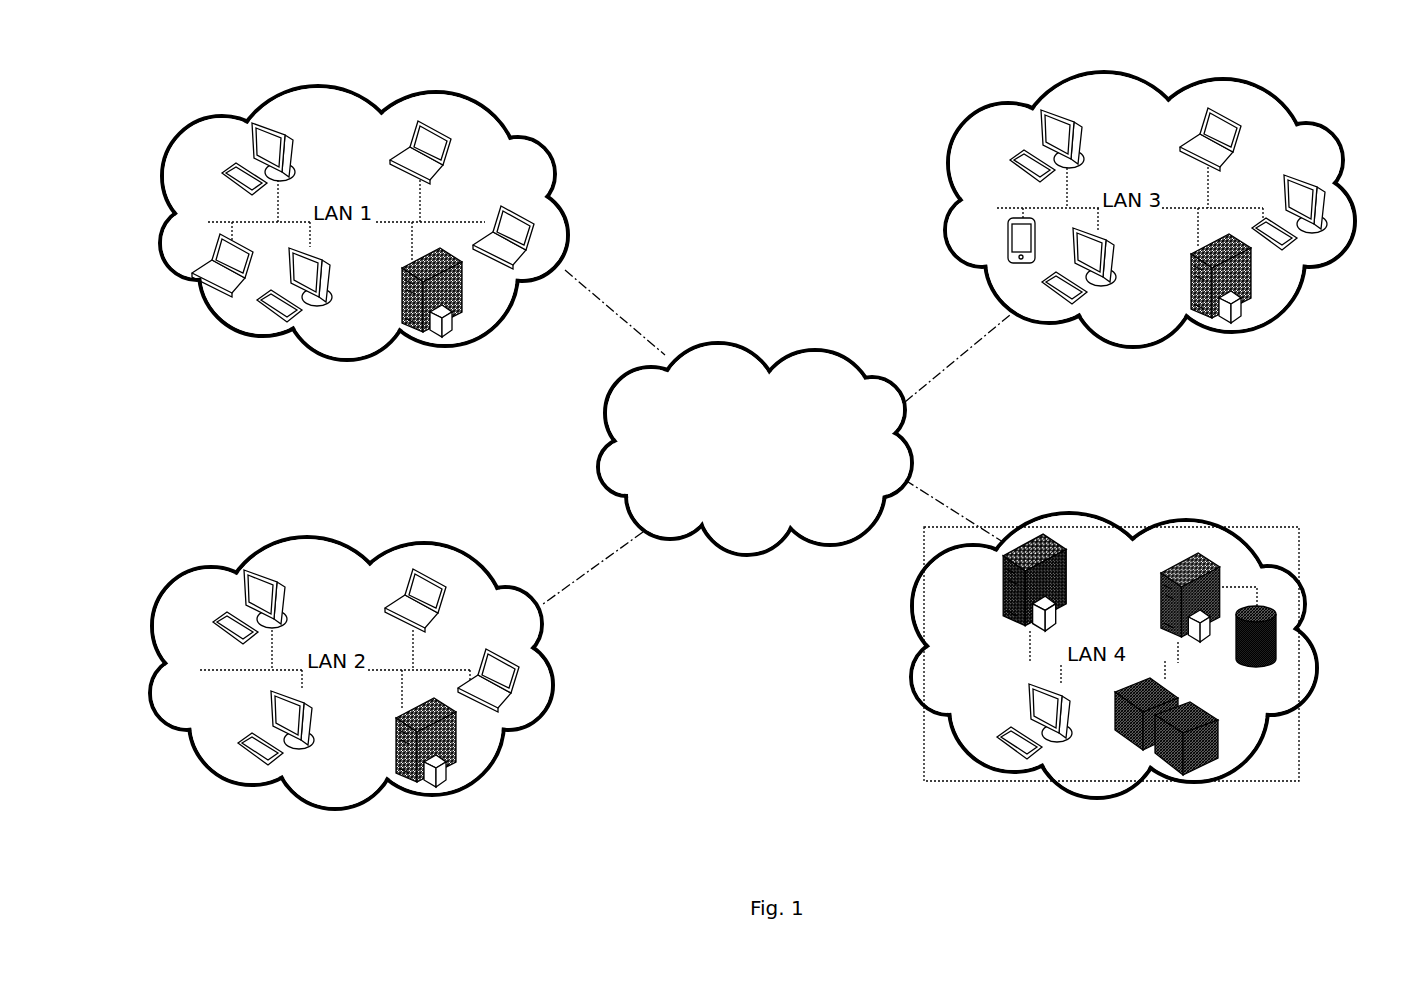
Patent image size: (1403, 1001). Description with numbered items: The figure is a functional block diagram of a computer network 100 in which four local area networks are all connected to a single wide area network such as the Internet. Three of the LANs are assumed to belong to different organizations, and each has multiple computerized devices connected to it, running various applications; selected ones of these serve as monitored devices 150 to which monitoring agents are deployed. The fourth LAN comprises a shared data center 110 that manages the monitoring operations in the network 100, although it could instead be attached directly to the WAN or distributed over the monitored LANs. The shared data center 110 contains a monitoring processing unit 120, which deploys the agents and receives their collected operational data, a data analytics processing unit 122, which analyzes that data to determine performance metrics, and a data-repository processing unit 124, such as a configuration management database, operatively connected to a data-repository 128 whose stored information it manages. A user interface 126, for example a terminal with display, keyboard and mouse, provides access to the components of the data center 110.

The network 100 is at (1310, 830).
The shared data center 110 is at (924, 727).
The monitoring processing unit 120 is at (1045, 533).
The data analytics processing unit 122 is at (1217, 740).
The data-repository processing unit 124 is at (1197, 556).
The user interface 126 is at (999, 737).
The data-repository 128 is at (1276, 638).
The monitored devices 150 is at (747, 422).